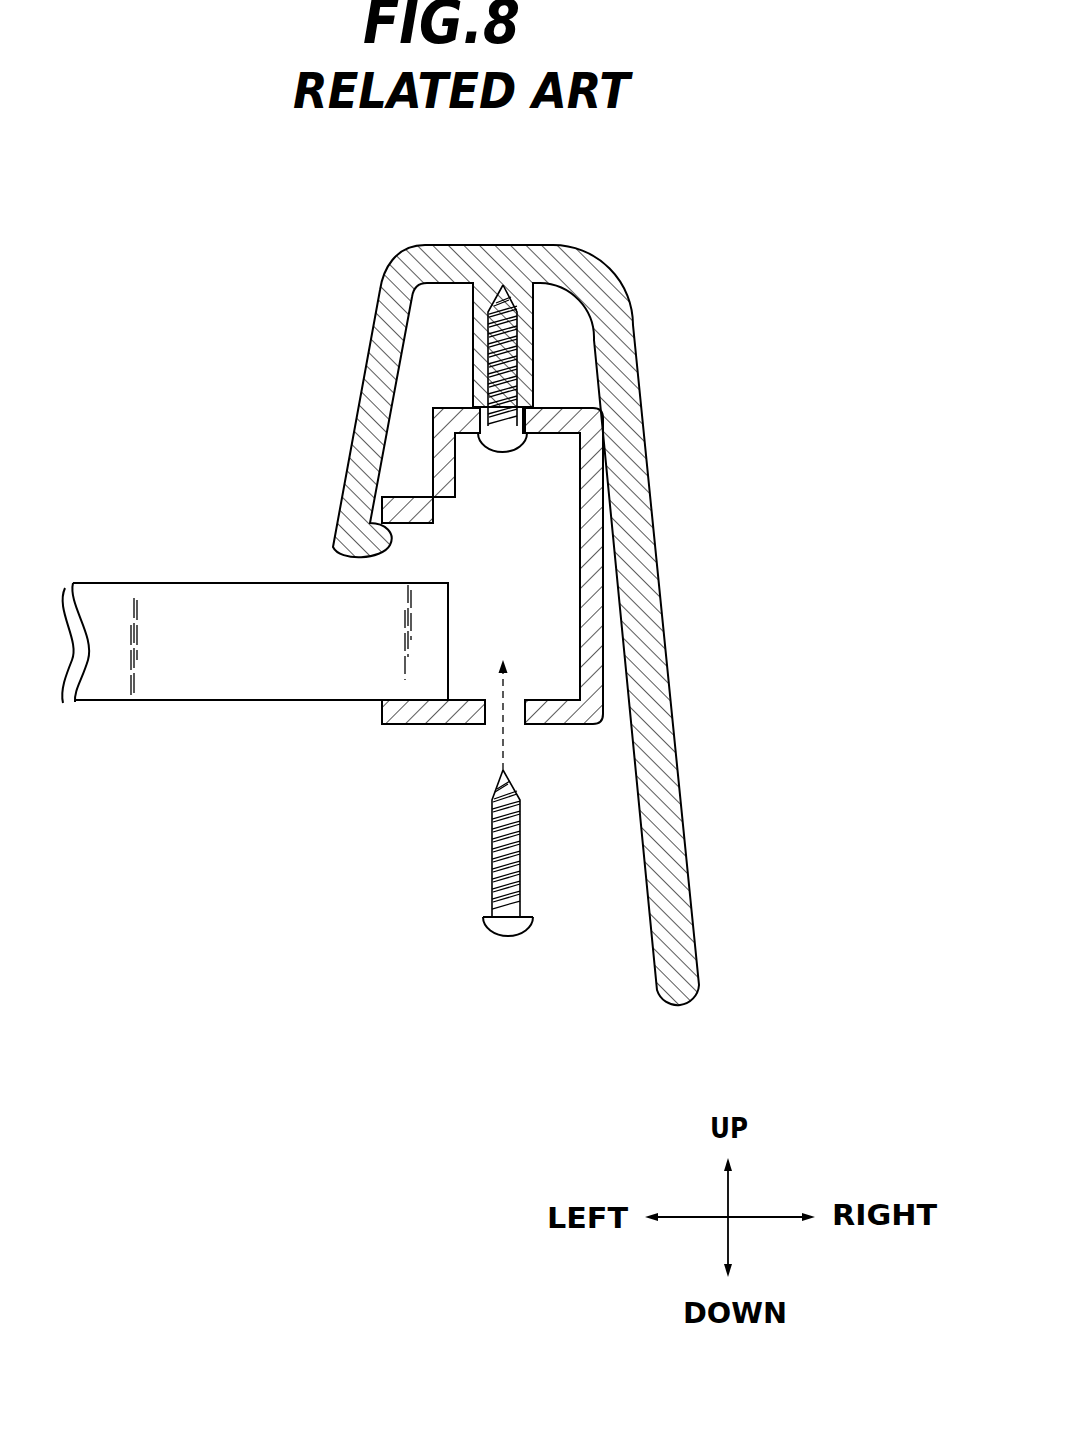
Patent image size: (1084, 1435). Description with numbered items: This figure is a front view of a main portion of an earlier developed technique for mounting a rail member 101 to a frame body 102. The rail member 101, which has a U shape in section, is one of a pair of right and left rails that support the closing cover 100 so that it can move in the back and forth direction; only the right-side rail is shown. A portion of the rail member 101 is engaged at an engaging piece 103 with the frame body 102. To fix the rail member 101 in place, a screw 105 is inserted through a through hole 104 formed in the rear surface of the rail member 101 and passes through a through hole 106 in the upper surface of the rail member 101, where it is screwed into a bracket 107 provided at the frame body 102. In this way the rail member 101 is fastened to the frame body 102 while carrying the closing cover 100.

The closing cover 100 is at (235, 687).
The rail member 101 is at (390, 727).
The frame body 102 is at (640, 400).
The engaging piece 103 is at (343, 548).
The through hole 104 is at (493, 722).
The screw 105 is at (528, 930).
The through hole 106 is at (533, 442).
The bracket 107 is at (537, 340).